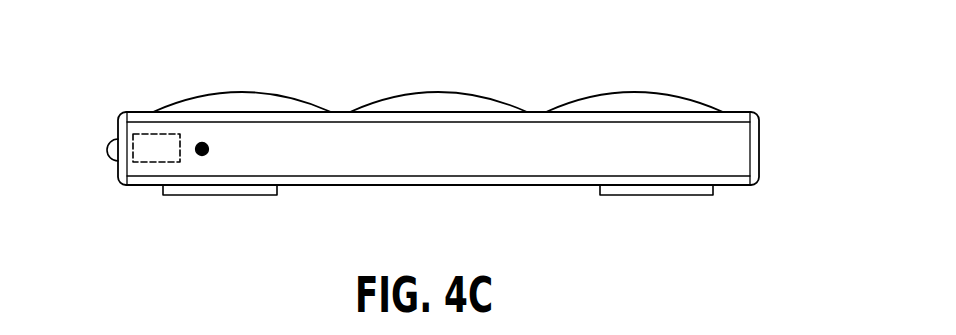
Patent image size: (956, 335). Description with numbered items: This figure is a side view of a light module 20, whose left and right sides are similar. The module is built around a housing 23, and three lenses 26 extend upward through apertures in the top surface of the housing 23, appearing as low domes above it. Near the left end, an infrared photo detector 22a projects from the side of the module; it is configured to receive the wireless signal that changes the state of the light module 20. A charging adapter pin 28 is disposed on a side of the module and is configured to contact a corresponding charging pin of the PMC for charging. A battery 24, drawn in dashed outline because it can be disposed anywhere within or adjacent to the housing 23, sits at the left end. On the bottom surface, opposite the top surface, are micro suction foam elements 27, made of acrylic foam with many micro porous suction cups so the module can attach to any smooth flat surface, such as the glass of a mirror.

The keyboard device 20 is at (435, 151).
The infrared photo detector 22a is at (107, 150).
The housing 23 is at (513, 163).
The battery 24 is at (147, 158).
The lenses 26 is at (226, 95).
The micro suction foam elements 27 is at (224, 197).
The charging adapter pin 28 is at (210, 146).